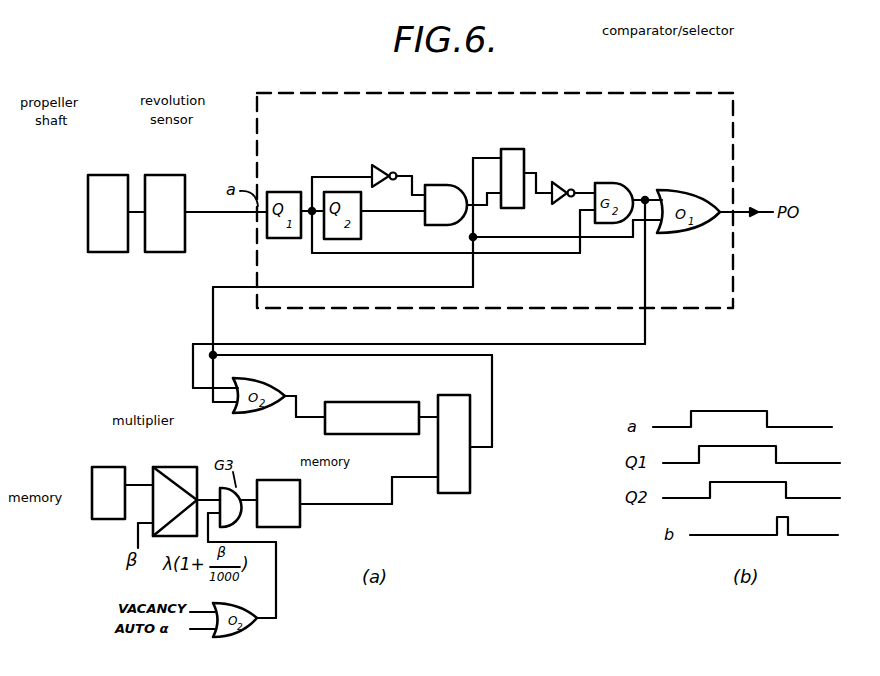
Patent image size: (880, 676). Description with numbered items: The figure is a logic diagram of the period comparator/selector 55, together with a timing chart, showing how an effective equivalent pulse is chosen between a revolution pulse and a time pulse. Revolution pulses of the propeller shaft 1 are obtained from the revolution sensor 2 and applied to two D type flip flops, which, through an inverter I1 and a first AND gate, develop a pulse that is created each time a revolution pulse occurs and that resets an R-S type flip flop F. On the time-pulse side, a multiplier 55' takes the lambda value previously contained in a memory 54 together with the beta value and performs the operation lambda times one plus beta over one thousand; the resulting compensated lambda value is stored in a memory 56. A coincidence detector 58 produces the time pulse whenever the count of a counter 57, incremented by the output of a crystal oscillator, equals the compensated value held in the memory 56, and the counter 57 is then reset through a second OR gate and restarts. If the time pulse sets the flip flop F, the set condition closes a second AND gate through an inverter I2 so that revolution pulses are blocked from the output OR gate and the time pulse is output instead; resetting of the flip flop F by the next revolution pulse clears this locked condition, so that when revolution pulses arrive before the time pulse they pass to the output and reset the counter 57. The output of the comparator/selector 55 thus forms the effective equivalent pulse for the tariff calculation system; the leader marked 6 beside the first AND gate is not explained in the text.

The propeller shaft 1 is at (100, 174).
The revolution sensor 2 is at (162, 174).
The AND gate G1 6 is at (466, 198).
The memory 54 is at (122, 522).
The period comparator/selector 55 is at (495, 186).
The multiplier 55' is at (175, 489).
The memory 56 is at (276, 480).
The counter 57 is at (391, 401).
The coincidence detector 58 is at (470, 474).
The R-S type flip flop F is at (521, 149).
The inverter I1 is at (373, 164).
The inverter I2 is at (562, 184).